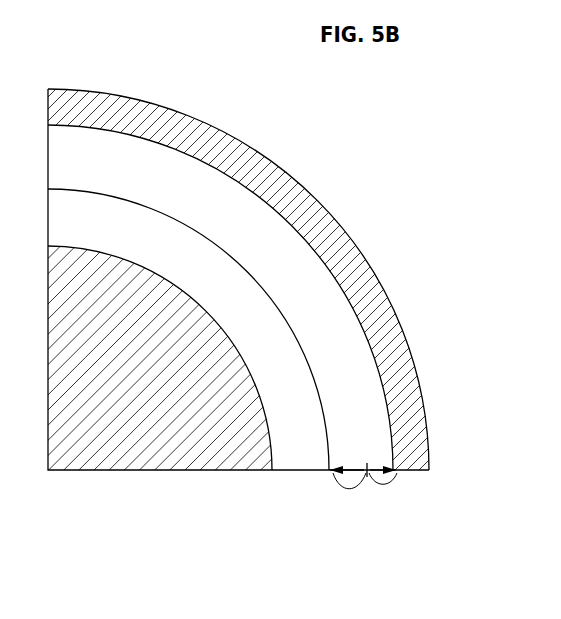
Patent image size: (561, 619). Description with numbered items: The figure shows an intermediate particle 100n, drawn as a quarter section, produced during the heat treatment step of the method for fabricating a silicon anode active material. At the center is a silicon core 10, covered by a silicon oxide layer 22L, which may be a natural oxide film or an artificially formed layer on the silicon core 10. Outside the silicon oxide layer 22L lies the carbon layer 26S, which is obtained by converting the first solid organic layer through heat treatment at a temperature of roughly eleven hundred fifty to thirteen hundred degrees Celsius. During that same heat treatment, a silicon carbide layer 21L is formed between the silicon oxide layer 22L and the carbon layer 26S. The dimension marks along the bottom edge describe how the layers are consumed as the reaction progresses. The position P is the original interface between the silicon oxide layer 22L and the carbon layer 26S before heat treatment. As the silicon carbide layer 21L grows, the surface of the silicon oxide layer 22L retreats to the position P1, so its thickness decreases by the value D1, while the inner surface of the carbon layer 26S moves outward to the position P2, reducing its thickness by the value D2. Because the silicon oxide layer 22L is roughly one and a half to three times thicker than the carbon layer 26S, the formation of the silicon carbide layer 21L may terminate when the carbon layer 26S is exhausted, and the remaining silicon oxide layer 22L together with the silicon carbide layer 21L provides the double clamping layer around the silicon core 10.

The intermediate particle 100n is at (293, 167).
The silicon core 10 is at (93, 470).
The silicon oxide layer 22L is at (242, 293).
The silicon carbide layer 21L is at (337, 315).
The carbon layer 26S is at (408, 357).
The position P1 is at (330, 472).
The position P2 is at (405, 474).
The interface position P is at (367, 476).
The value D1 is at (348, 488).
The value D2 is at (383, 486).